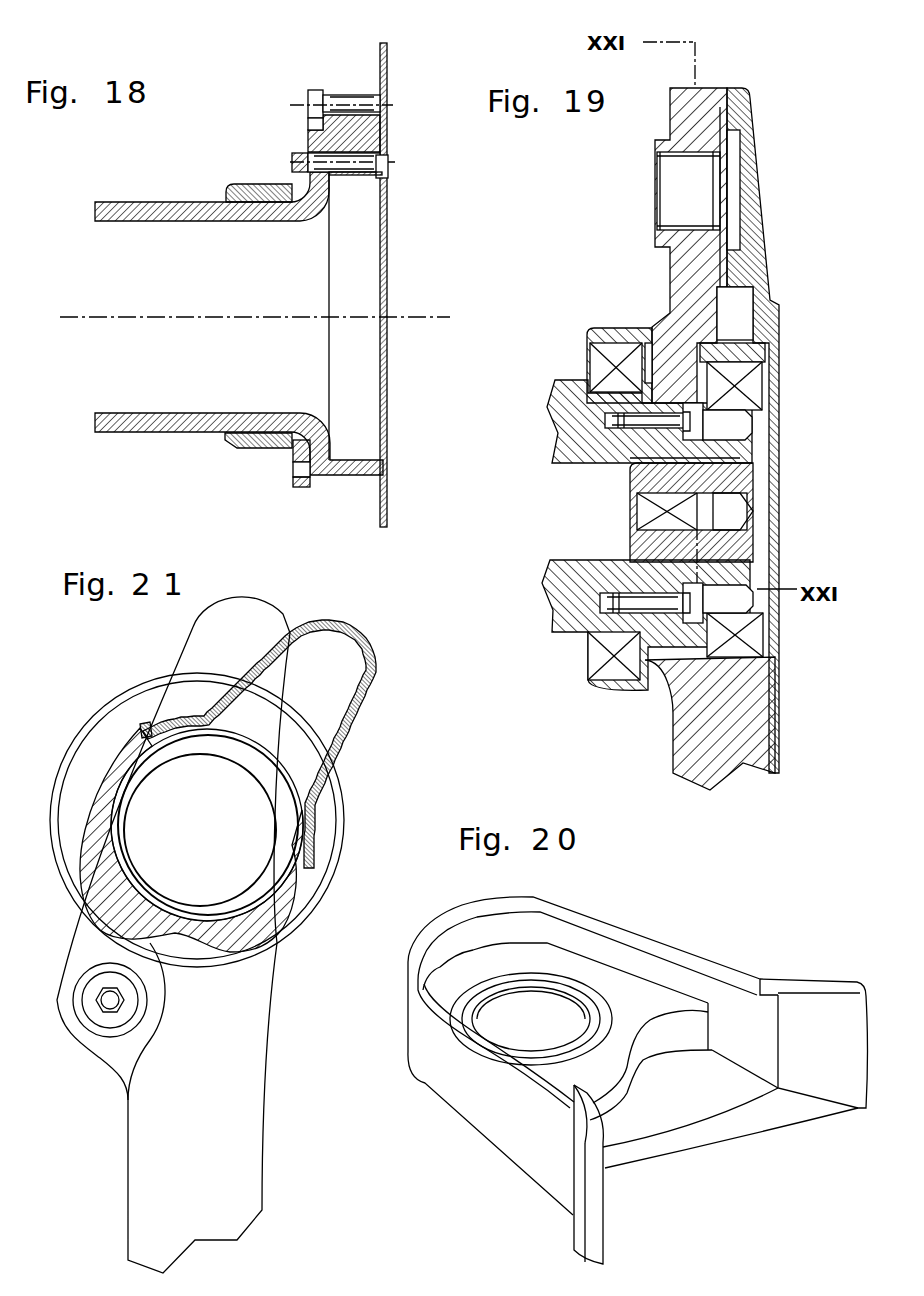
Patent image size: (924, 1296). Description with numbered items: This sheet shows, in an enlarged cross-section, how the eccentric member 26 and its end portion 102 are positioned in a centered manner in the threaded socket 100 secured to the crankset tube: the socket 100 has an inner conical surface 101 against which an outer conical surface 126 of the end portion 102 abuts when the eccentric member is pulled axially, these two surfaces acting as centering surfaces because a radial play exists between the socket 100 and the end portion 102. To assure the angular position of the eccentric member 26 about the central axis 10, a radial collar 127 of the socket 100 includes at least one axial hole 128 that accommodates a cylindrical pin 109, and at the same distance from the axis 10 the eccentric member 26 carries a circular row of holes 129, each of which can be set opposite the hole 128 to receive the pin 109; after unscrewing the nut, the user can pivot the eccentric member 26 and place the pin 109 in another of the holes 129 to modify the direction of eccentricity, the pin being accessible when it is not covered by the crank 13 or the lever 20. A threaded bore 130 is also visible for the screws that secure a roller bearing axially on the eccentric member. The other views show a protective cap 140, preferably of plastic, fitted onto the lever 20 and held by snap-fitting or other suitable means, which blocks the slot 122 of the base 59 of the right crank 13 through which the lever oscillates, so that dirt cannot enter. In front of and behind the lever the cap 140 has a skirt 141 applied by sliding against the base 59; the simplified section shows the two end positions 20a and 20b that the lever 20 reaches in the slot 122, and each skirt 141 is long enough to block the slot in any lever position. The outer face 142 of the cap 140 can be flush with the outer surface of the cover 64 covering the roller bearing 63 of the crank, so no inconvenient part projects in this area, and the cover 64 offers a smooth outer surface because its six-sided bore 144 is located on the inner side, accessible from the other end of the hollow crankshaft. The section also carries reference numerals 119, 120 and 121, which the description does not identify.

In FIG. 18, the central axis 10 is at (415, 317).
In FIG. 21, the right crank 13 is at (153, 1205).
In FIG. 19, the lever 20 is at (687, 280).
In FIG. 21, the end position of the lever 20a is at (318, 653).
In FIG. 21, the end position of the lever 20b is at (240, 617).
In FIG. 18, the eccentric member 26 is at (370, 143).
In FIG. 21, the eccentric member 26 is at (102, 733).
In FIG. 19, the base of the right crank 59 is at (770, 350).
In FIG. 21, the base of the right crank 59 is at (102, 807).
In FIG. 19, the roller bearing 63 is at (740, 655).
In FIG. 19, the cover 64 is at (767, 572).
In FIG. 18, the threaded socket 100 is at (233, 190).
In FIG. 18, the inner conical surface 101 is at (322, 428).
In FIG. 18, the end portion 102 is at (206, 213).
In FIG. 18, the cylindrical pin 109 is at (351, 178).
In FIG. 19, the bracket 119 is at (573, 573).
In FIG. 19, the plate 120 is at (687, 620).
In FIG. 19, the bolt 121 is at (627, 607).
In FIG. 19, the slot 122 is at (697, 360).
In FIG. 18, the outer conical surface 126 is at (291, 444).
In FIG. 18, the radial collar 127 is at (306, 132).
In FIG. 18, the axial hole 128 is at (300, 159).
In FIG. 18, the holes 129 is at (384, 164).
In FIG. 18, the threaded bore 130 is at (316, 98).
In FIG. 19, the cap 140 is at (728, 92).
In FIG. 21, the cap 140 is at (377, 675).
In FIG. 20, the cap 140 is at (680, 945).
In FIG. 21, the skirt 141 is at (147, 737).
In FIG. 20, the skirt 141 is at (810, 980).
In FIG. 19, the outer face 142 is at (773, 307).
In FIG. 19, the six-sided bore 144 is at (647, 503).